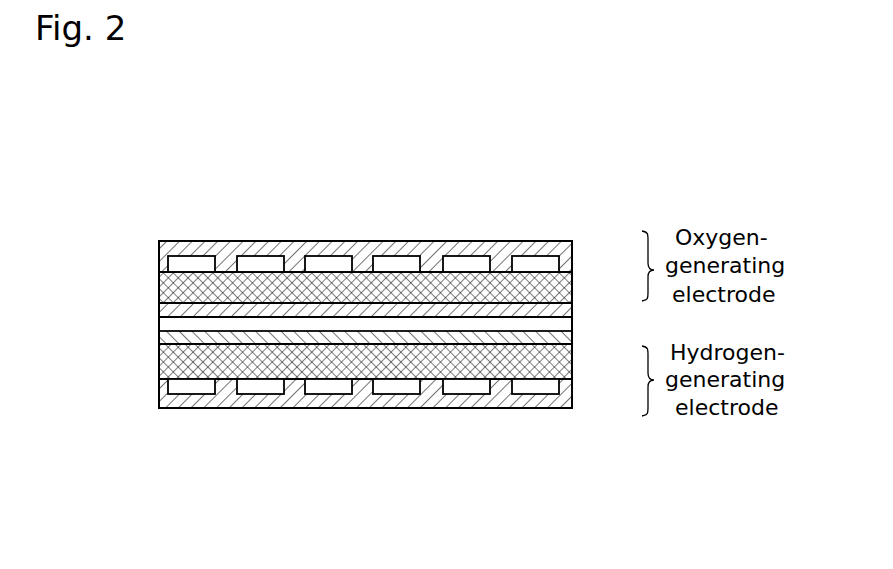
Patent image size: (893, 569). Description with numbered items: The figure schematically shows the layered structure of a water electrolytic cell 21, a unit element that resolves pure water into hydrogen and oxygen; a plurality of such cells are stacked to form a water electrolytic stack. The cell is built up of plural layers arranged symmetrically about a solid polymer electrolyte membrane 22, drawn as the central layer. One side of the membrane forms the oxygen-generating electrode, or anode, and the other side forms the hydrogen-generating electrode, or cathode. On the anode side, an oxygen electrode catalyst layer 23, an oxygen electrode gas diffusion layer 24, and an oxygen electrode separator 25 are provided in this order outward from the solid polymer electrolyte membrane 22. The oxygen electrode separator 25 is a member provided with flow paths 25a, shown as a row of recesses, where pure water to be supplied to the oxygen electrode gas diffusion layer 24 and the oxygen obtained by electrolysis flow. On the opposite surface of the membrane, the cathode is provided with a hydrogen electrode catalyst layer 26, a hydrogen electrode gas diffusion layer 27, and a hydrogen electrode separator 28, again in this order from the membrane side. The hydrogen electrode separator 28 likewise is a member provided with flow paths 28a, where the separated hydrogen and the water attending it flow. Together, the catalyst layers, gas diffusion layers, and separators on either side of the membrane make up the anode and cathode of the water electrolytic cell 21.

The water electrolytic cell 21 is at (202, 157).
The solid polymer electrolyte membrane 22 is at (572, 323).
The oxygen electrode catalyst layer 23 is at (572, 310).
The oxygen electrode gas diffusion layer 24 is at (572, 288).
The oxygen electrode separator 25 is at (572, 257).
The flow paths 25a is at (192, 266).
The hydrogen electrode catalyst layer 26 is at (572, 338).
The hydrogen electrode gas diffusion layer 27 is at (572, 362).
The hydrogen electrode separator 28 is at (572, 393).
The flow paths 28a is at (192, 387).